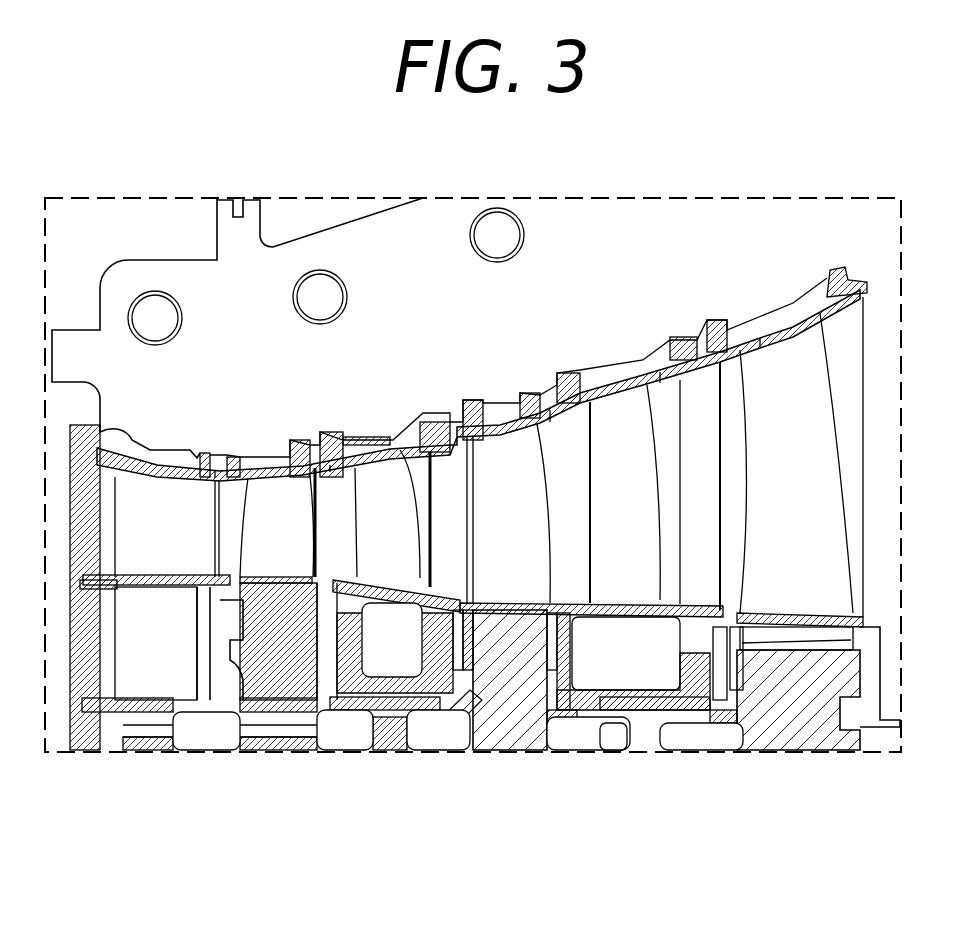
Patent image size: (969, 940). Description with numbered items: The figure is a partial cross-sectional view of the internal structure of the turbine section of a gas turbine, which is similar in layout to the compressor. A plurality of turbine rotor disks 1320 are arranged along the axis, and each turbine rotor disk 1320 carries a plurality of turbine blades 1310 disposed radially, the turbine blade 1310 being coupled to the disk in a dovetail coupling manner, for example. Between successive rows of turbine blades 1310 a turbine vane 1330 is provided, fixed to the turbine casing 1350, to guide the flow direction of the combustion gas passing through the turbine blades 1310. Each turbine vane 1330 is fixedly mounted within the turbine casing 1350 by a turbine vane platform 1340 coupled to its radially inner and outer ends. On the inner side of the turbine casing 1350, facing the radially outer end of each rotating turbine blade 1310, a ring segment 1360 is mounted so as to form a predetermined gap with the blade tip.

The turbine blade 1310 is at (280, 548).
The turbine rotor disk 1320 is at (807, 690).
The turbine vane 1330 is at (168, 535).
The turbine vane platform 1340 is at (415, 560).
The turbine casing 1350 is at (425, 250).
The ring segment 1360 is at (262, 470).